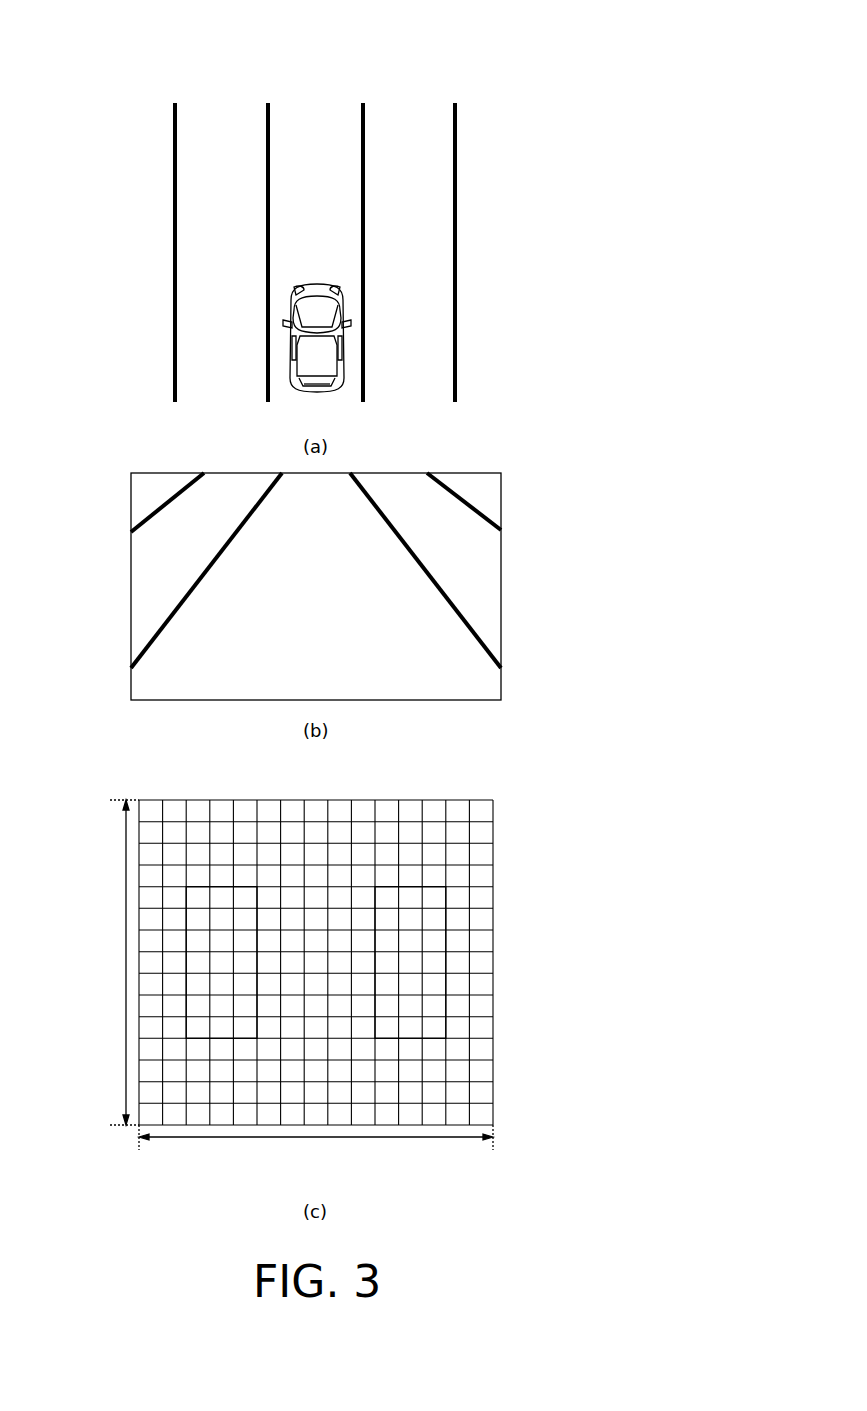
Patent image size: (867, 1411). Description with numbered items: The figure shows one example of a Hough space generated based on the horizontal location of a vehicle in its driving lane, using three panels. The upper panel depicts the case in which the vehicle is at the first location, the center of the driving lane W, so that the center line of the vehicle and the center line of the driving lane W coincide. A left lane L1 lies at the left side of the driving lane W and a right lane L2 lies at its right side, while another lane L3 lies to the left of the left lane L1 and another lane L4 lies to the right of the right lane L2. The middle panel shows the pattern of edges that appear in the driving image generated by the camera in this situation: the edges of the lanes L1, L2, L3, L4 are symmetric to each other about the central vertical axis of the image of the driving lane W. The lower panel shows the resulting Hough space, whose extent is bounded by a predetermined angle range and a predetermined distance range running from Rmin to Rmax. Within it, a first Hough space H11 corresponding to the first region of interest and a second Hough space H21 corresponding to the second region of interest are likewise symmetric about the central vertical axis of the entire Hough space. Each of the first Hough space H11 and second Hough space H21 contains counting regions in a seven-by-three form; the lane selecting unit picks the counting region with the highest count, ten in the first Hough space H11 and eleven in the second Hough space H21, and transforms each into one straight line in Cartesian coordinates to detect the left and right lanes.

The left lane L1 is at (268, 102).
The right lane L2 is at (363, 102).
The another lane L3 is at (175, 102).
The another lane L4 is at (455, 102).
The driving lane W is at (317, 118).
The first Hough space H11 is at (220, 886).
The second Hough space H21 is at (408, 886).
The predetermined maximum distance Rmax is at (95, 953).
The predetermined minimum distance Rmin is at (99, 1124).